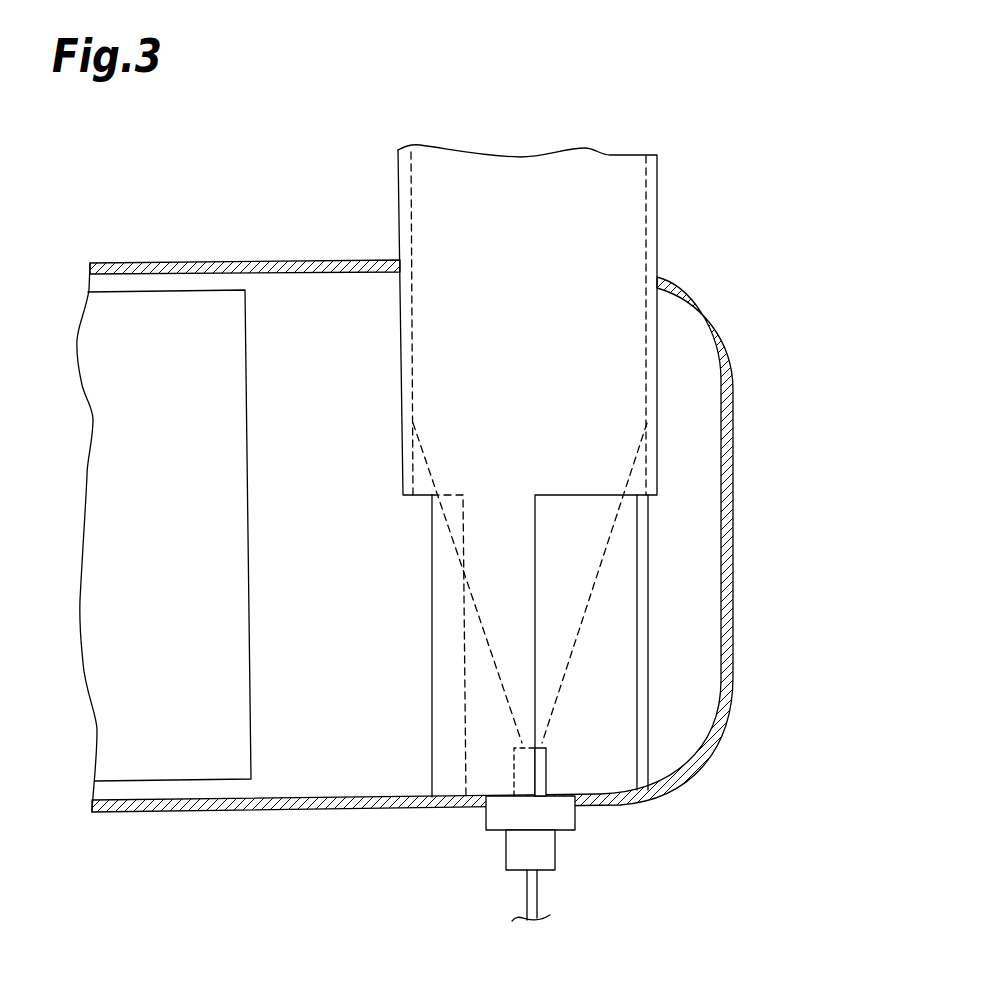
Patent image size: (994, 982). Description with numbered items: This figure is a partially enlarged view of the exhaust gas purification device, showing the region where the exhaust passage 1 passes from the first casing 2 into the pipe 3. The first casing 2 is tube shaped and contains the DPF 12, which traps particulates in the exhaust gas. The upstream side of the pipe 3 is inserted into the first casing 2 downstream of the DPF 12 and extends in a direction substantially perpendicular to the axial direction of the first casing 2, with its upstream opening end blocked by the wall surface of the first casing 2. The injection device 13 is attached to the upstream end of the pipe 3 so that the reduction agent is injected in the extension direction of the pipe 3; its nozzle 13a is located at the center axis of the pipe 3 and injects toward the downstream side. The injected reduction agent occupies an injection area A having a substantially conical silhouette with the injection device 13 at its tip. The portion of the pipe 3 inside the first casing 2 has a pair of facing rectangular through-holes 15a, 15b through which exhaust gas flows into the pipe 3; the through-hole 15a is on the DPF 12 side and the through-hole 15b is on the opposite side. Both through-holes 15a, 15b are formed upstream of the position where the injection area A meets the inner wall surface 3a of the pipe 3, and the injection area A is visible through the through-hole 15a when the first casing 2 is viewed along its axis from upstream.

The exhaust passage 1 is at (433, 448).
The first casing 2 is at (322, 255).
The pipe 3 is at (593, 441).
The inner wall surface 3a is at (645, 189).
The DPF 12 is at (163, 322).
The injection device 13 is at (571, 854).
The nozzle 13a is at (547, 768).
The through-hole 15a is at (430, 653).
The through-hole 15b is at (643, 662).
The injection area A is at (600, 553).